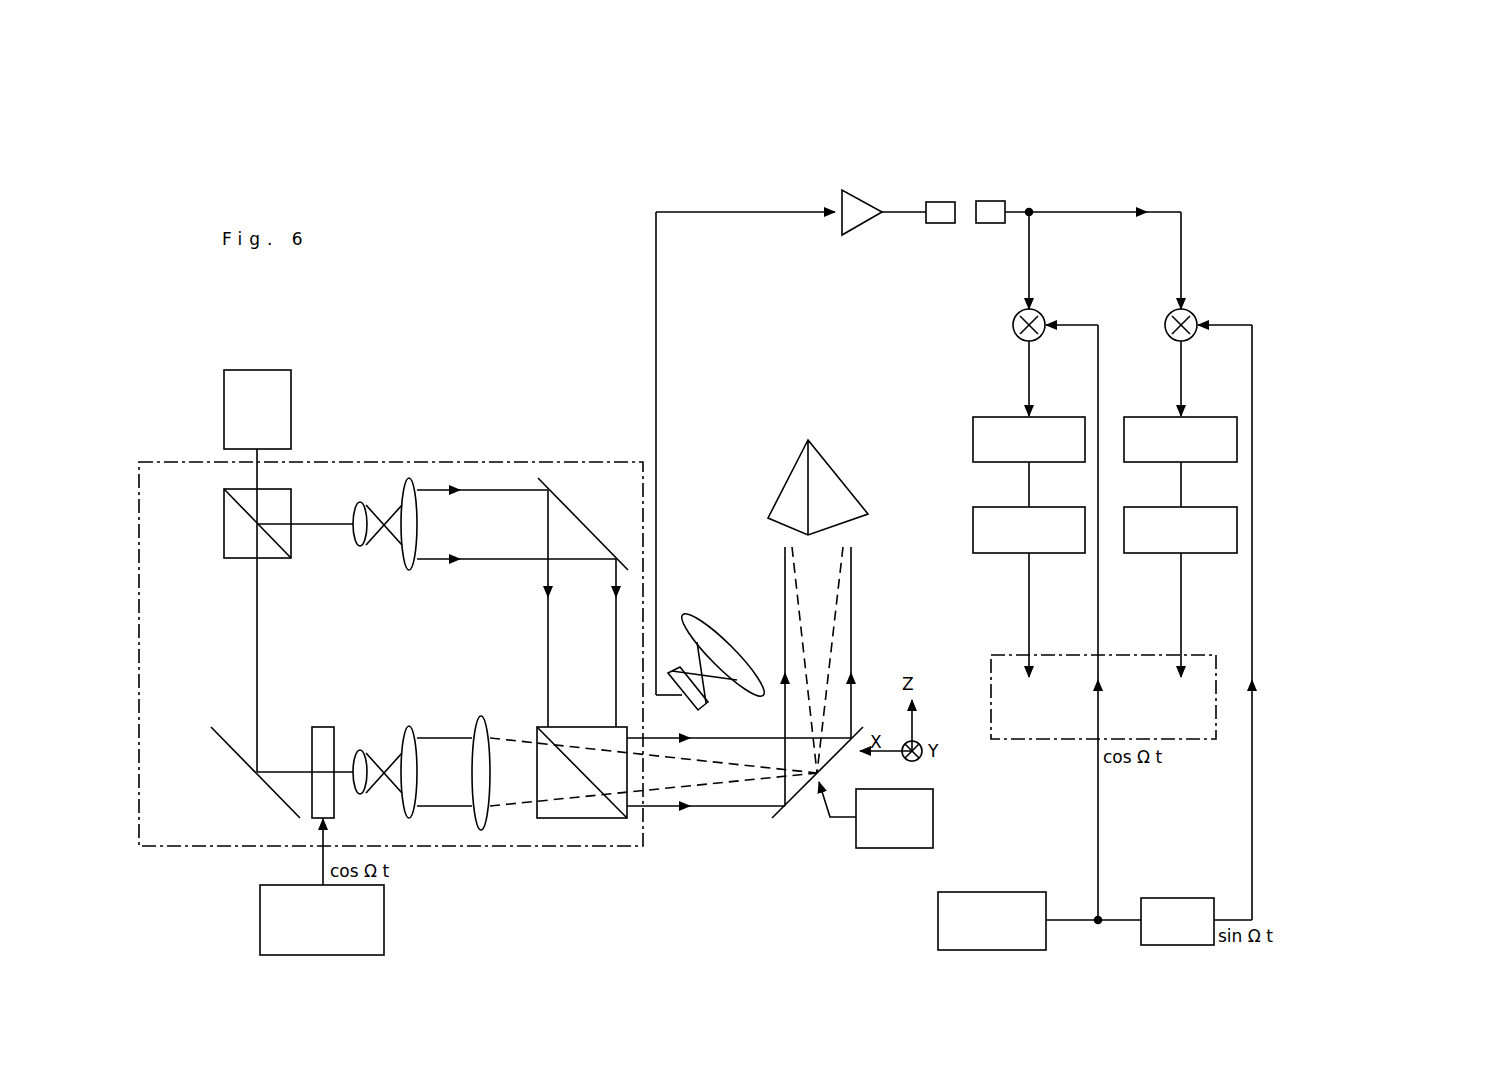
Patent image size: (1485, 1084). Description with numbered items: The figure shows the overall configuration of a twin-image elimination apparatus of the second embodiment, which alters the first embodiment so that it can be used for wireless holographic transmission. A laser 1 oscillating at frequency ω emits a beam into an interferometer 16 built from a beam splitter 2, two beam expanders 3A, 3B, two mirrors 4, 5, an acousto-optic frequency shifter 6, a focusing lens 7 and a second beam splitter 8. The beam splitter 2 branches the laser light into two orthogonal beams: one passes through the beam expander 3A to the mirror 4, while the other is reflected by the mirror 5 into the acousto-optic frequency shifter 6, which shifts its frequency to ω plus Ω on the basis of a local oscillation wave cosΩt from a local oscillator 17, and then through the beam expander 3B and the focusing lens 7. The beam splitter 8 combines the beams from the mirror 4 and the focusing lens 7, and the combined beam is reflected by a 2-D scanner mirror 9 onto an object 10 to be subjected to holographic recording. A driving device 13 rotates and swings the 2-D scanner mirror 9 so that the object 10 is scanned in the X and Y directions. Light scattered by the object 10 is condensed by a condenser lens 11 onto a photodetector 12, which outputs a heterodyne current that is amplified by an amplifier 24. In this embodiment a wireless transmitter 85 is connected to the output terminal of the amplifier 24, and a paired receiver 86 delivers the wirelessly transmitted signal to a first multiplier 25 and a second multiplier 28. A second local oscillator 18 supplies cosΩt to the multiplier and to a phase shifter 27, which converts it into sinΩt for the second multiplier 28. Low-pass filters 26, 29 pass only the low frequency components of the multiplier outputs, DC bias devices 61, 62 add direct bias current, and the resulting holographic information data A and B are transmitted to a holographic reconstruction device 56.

The laser 1 is at (224, 415).
The beam splitter 2 is at (224, 527).
The beam expander 3A is at (386, 504).
The beam expander 3B is at (386, 752).
The mirror 4 is at (552, 490).
The mirror 5 is at (222, 745).
The acousto-optic frequency shifter 6 is at (323, 727).
The focusing lens 7 is at (484, 717).
The beam splitter 8 is at (580, 818).
The 2-D scanner mirror 9 is at (790, 803).
The object to be subjected to holographic recording 10 is at (855, 457).
The condenser lens 11 is at (700, 615).
The photodetector 12 is at (672, 670).
The driving device 13 is at (895, 848).
The interferometer 16 is at (455, 462).
The local oscillator 17 is at (260, 922).
The local oscillator 18 is at (938, 925).
The amplifier 24 is at (842, 198).
The first multiplier 25 is at (1043, 313).
The low-pass filter 26 is at (973, 445).
The phase shifter 27 is at (1141, 940).
The second multiplier 28 is at (1195, 313).
The low-pass filter 29 is at (1237, 434).
The holographic reconstruction device 56 is at (1216, 722).
The DC bias device 61 is at (973, 535).
The DC bias device 62 is at (1237, 524).
The wireless transmitter 85 is at (936, 202).
The receiver 86 is at (992, 201).